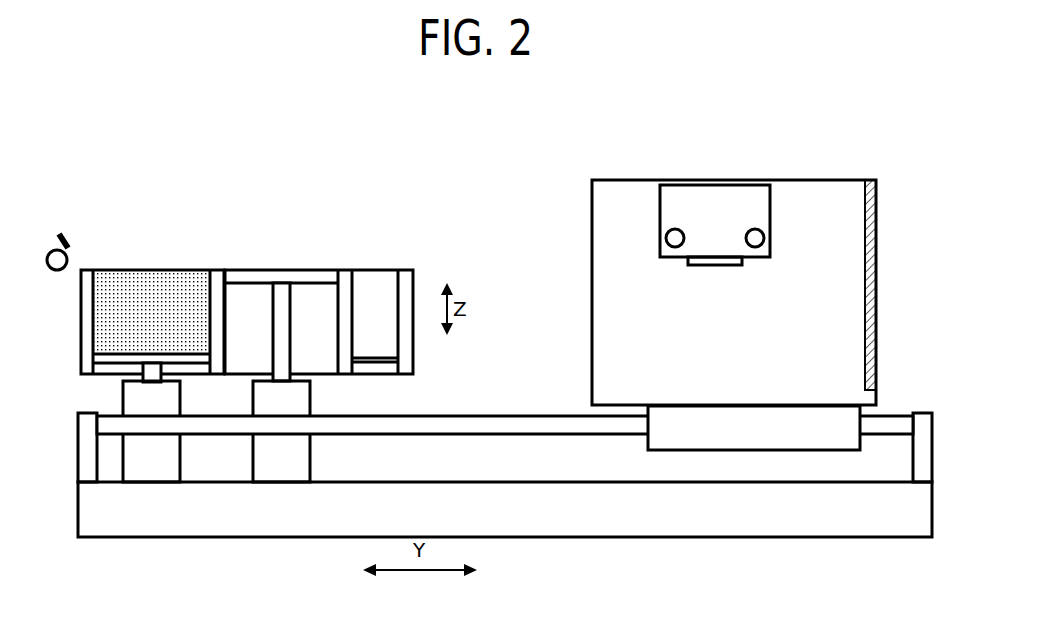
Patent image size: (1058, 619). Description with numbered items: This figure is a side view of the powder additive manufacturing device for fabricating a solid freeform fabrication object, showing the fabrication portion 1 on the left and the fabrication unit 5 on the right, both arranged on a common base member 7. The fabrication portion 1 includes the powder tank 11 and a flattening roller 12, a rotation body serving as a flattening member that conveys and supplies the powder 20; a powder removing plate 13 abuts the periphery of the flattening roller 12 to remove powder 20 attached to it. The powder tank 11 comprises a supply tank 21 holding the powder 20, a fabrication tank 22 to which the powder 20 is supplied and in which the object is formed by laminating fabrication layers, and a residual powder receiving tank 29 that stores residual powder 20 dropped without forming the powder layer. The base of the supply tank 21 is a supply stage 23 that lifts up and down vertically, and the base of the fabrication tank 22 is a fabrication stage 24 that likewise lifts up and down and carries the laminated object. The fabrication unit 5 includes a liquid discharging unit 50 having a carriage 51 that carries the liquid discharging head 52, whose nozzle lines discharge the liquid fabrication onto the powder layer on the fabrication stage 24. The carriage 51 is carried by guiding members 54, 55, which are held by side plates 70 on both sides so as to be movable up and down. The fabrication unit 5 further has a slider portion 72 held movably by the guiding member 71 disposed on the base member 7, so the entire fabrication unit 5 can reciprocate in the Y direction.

The fabrication portion 1 is at (128, 311).
The fabrication unit 5 is at (710, 253).
The base member 7 is at (588, 537).
The powder tank 11 is at (319, 323).
The flattening roller 12 is at (51, 251).
The powder removing plate 13 is at (65, 236).
The powder 20 is at (128, 353).
The supply tank 21 is at (98, 326).
The fabrication tank 22 is at (337, 278).
The supply stage 23 is at (100, 357).
The fabrication stage 24 is at (248, 277).
The residual powder receiving tank 29 is at (398, 280).
The liquid discharging unit 50 is at (661, 209).
The carriage 51 is at (714, 195).
The liquid discharging head 52 is at (722, 266).
The guiding member 54 is at (755, 234).
The guiding member 55 is at (675, 234).
The side plate 70 is at (602, 304).
The guiding member 71 is at (468, 416).
The slider portion 72 is at (754, 438).